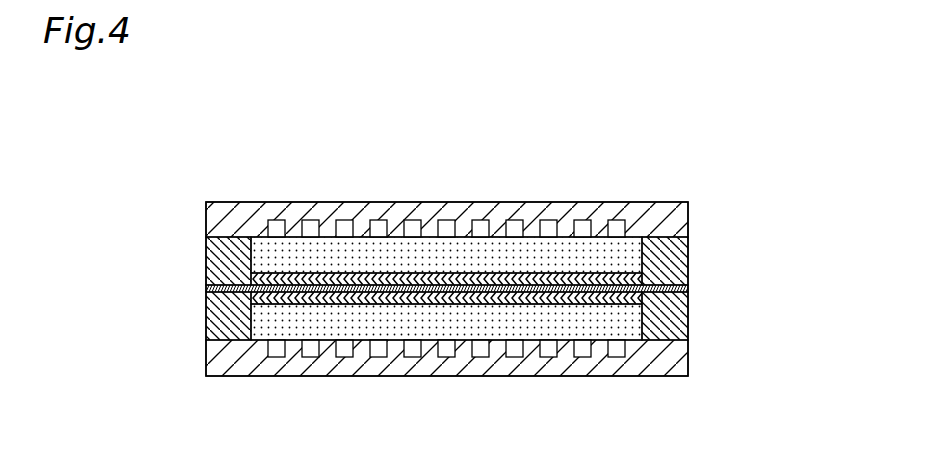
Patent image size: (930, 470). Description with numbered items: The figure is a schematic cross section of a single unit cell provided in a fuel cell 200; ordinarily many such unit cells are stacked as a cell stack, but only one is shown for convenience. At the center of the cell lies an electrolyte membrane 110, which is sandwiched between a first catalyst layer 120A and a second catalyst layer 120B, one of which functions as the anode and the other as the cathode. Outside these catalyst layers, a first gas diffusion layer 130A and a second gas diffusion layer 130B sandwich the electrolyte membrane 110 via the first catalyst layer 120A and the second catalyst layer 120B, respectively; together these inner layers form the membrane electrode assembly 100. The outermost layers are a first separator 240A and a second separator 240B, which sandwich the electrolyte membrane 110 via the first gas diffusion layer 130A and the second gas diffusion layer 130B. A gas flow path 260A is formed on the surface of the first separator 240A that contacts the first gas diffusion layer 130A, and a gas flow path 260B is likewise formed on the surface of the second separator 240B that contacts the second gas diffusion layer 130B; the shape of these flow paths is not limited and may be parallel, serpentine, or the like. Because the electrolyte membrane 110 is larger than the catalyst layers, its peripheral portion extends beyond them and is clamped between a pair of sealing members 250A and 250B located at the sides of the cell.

The membrane electrode assembly 100 is at (132, 225).
The electrolyte membrane 110 is at (212, 288).
The first catalyst layer 120A is at (277, 261).
The second catalyst layer 120B is at (272, 315).
The first gas diffusion layer 130A is at (246, 260).
The second gas diffusion layer 130B is at (247, 305).
The fuel cell 200 is at (455, 173).
The first separator 240A is at (647, 211).
The second separator 240B is at (653, 377).
The sealing member 250A is at (677, 261).
The sealing member 250B is at (672, 320).
The gas flow path 260A is at (278, 221).
The gas flow path 260B is at (277, 354).